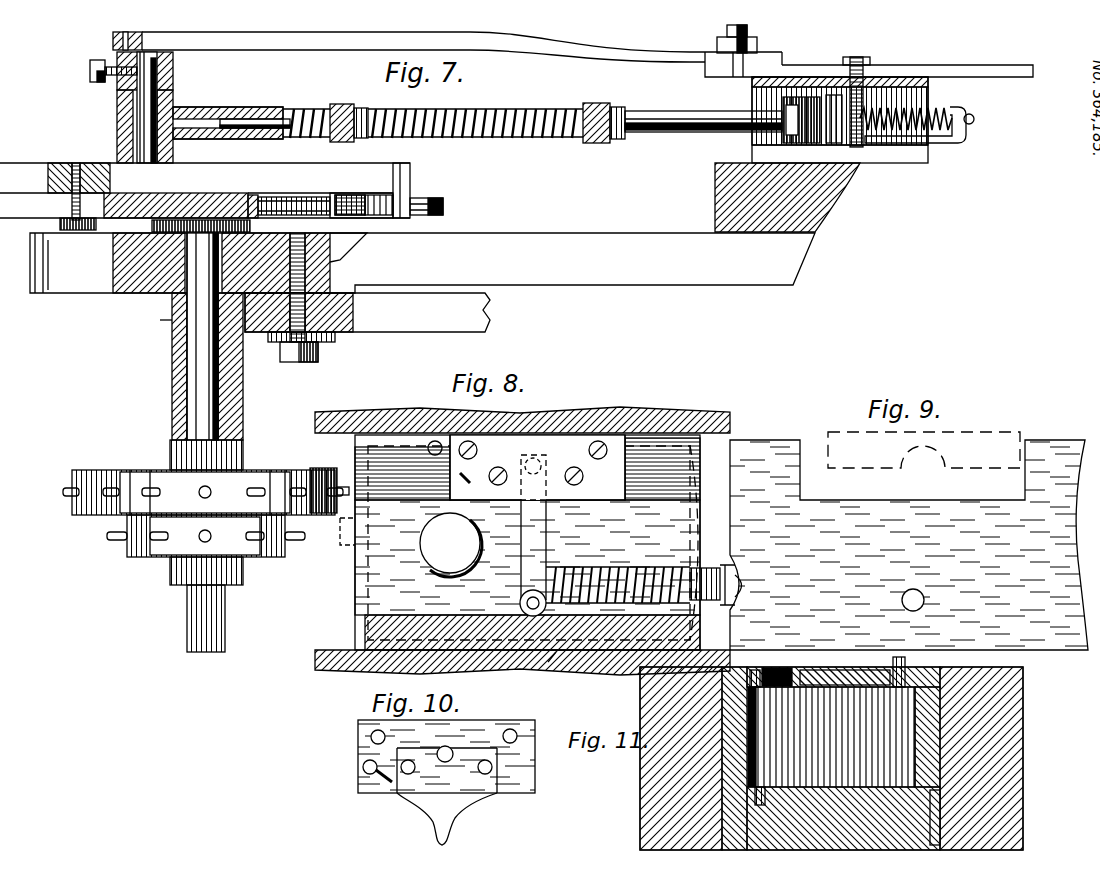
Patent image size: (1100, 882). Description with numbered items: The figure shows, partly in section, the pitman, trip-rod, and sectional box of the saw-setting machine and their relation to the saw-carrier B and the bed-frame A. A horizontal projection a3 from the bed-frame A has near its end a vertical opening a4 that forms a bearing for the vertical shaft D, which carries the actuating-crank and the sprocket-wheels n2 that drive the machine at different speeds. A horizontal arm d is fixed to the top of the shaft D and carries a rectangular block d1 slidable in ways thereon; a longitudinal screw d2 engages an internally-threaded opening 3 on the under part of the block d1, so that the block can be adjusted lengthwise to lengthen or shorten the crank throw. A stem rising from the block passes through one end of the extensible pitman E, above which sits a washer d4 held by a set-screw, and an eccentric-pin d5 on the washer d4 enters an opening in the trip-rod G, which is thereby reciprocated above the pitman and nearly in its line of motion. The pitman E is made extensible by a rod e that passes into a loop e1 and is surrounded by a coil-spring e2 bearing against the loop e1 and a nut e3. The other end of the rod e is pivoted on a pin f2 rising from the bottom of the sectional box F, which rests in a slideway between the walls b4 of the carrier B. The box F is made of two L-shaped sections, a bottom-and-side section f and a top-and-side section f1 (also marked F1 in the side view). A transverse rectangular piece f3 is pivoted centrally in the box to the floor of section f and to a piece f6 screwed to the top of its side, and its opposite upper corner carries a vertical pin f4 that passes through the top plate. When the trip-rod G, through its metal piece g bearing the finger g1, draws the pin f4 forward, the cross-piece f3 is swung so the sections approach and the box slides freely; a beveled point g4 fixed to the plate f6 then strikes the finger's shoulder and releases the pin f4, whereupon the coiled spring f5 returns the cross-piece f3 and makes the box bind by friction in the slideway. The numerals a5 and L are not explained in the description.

In FIG. 7, the trip-rod G is at (462, 41).
In FIG. 7, the eccentric-pin d5 is at (127, 30).
In FIG. 7, the washer d4 is at (142, 107).
In FIG. 7, the extensible pitman E is at (231, 113).
In FIG. 7, the nut e3 is at (349, 112).
In FIG. 7, the coil-spring e2 is at (433, 132).
In FIG. 7, the loop e1 is at (602, 113).
In FIG. 7, the rod e is at (703, 113).
In FIG. 8, the rod e is at (332, 508).
In FIG. 7, the piece of metal g is at (816, 51).
In FIG. 7, the finger g1 is at (907, 62).
In FIG. 7, the beveled point g4 is at (856, 92).
In FIG. 10, the beveled point g4 is at (448, 822).
In FIG. 11, the beveled point g4 is at (903, 665).
In FIG. 7, the top and side section of the sectional box F1 is at (831, 120).
In FIG. 8, the sectional box F is at (522, 529).
In FIG. 7, the coiled spring f5 is at (917, 115).
In FIG. 8, the coiled spring f5 is at (633, 574).
In FIG. 7, the top and side section of the sectional box f1 is at (836, 115).
In FIG. 8, the top and side section of the sectional box f1 is at (551, 659).
In FIG. 11, the top and side section of the sectional box f1 is at (845, 667).
In FIG. 7, the saw-carrier B is at (775, 197).
In FIG. 7, the bed-frame A is at (422, 263).
In FIG. 7, the horizontal projection a3 is at (62, 265).
In FIG. 7, the vertical opening a4 is at (155, 318).
In FIG. 7, the bolt a5 is at (307, 287).
In FIG. 7, the arm L is at (367, 327).
In FIG. 7, the rectangular block d1 is at (205, 197).
In FIG. 7, the internally-threaded opening 3 is at (358, 198).
In FIG. 7, the horizontal arm d is at (20, 225).
In FIG. 7, the longitudinal screw d2 is at (438, 202).
In FIG. 7, the vertical shaft D is at (206, 442).
In FIG. 7, the sprocket-wheels n2 is at (203, 513).
In FIG. 8, the walls of the slideway b4 is at (515, 543).
In FIG. 9, the walls of the slideway b4 is at (904, 541).
In FIG. 11, the walls of the slideway b4 is at (1038, 715).
In FIG. 8, the bottom and side section of the sectional box f is at (400, 455).
In FIG. 11, the bottom and side section of the sectional box f is at (831, 758).
In FIG. 8, the piece f6 is at (533, 462).
In FIG. 10, the piece f6 is at (460, 748).
In FIG. 11, the piece f6 is at (770, 668).
In FIG. 8, the pin f2 is at (451, 545).
In FIG. 8, the transverse rectangular piece f3 is at (533, 527).
In FIG. 11, the transverse rectangular piece f3 is at (831, 746).
In FIG. 8, the vertical pin f4 is at (533, 562).
In FIG. 11, the vertical pin f4 is at (928, 742).